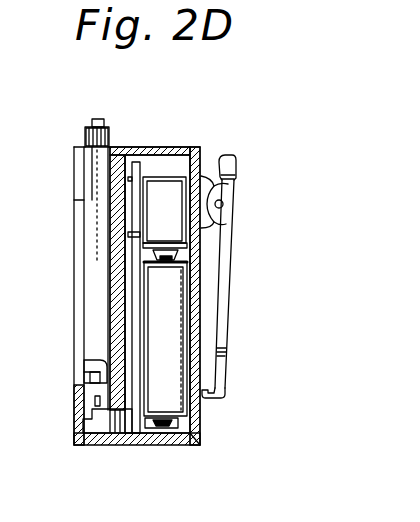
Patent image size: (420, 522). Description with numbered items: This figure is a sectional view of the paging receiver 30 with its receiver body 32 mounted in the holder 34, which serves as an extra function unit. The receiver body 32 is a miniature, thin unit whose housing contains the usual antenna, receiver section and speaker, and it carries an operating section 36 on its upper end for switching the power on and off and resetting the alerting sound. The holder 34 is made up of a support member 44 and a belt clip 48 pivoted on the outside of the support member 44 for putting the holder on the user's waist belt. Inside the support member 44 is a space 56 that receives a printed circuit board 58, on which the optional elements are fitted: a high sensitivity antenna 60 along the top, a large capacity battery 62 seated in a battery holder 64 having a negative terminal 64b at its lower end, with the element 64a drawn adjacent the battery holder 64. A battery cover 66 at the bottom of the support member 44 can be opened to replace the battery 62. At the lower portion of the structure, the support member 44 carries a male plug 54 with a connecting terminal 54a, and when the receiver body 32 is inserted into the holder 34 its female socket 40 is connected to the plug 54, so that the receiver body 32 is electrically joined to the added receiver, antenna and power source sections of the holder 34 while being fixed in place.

The paging receiver 30 is at (258, 118).
The receiver body 32 is at (82, 128).
The operating section 36 is at (96, 120).
The printed circuit board 58 is at (134, 163).
The space 56 is at (153, 163).
The high sensitivity antenna 60 is at (177, 147).
The belt clip 48 is at (235, 198).
The holder 34 is at (236, 317).
The battery holder 64 is at (187, 245).
The contact tab 64a is at (138, 235).
The support member 44 is at (193, 355).
The female socket 40 is at (85, 372).
The connecting terminal 54a is at (97, 401).
The plug 54 is at (110, 422).
The large capacity battery 62 is at (183, 407).
The negative terminal 64b is at (158, 428).
The battery cover 66 is at (200, 447).